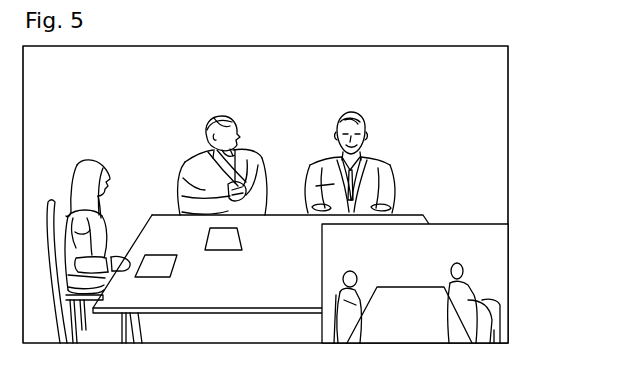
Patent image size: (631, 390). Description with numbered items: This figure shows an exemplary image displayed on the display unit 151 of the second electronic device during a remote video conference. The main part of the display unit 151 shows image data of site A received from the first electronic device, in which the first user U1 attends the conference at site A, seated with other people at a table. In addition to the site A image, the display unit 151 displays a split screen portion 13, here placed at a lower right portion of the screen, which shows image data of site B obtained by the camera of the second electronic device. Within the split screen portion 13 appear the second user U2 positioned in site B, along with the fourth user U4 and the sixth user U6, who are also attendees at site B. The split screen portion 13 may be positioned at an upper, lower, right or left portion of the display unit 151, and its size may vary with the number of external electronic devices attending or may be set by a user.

The display unit 151 is at (508, 71).
The first user U1 is at (380, 177).
The split screen portion 13 is at (508, 241).
The second user U2 is at (466, 278).
The sixth user U6 is at (483, 302).
The fourth user U4 is at (346, 343).